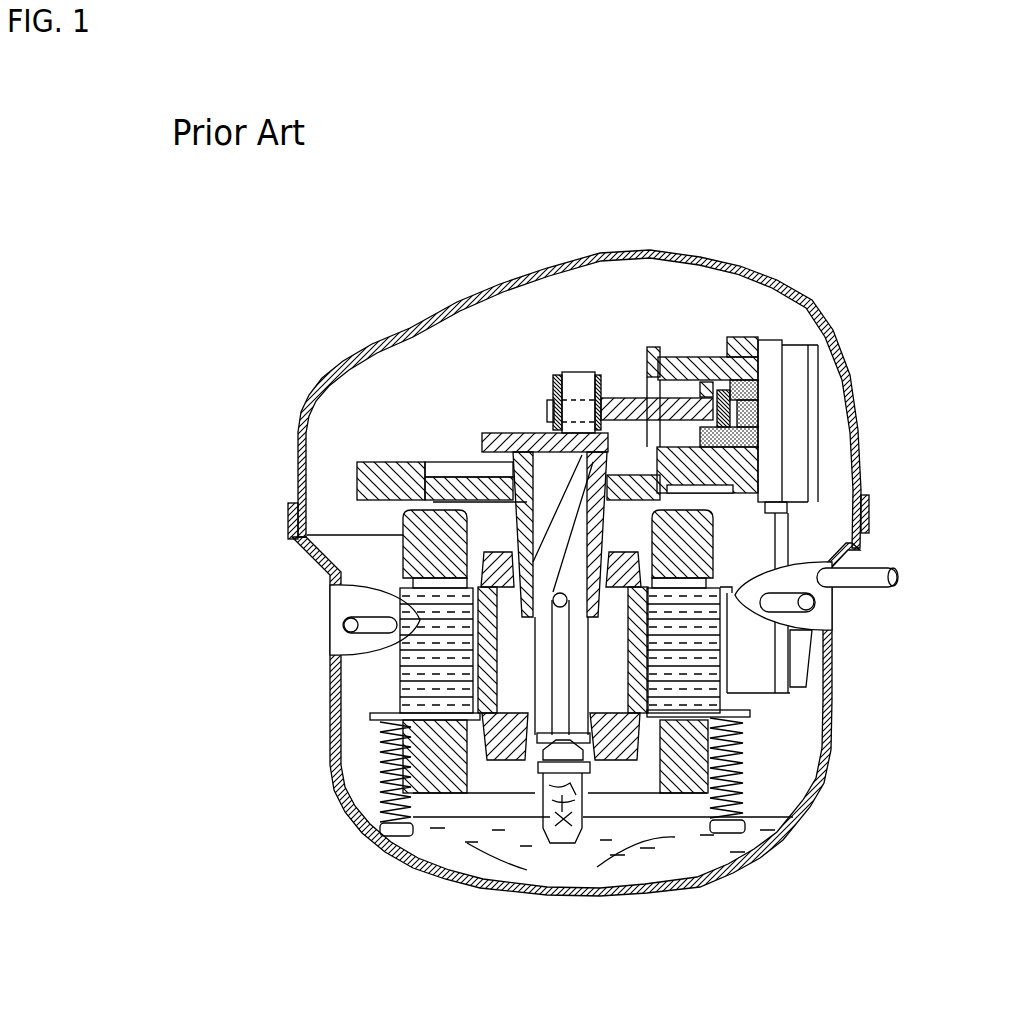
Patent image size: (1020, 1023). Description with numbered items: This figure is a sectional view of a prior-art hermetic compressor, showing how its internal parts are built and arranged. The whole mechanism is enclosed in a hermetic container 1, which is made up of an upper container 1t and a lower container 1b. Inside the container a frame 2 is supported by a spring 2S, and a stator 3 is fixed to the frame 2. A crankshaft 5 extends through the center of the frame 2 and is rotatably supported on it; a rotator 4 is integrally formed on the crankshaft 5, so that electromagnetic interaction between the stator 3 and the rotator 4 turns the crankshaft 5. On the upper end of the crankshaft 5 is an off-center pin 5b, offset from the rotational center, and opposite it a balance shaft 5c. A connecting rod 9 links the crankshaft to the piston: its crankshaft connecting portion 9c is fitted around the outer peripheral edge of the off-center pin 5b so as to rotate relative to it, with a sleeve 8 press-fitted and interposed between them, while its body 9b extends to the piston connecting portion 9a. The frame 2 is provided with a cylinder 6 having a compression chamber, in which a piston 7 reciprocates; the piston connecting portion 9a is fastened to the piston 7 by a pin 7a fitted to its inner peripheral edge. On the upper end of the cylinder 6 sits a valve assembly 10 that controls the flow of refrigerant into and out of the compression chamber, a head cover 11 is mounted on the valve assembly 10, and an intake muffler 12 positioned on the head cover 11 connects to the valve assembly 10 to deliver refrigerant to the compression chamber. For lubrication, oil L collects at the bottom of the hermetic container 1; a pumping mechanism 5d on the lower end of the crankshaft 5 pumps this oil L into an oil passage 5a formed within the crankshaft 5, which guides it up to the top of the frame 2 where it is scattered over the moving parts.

The hermetic container 1 is at (228, 580).
The upper container 1t is at (300, 460).
The lower container 1b is at (328, 653).
The frame 2 is at (393, 462).
The spring 2S is at (385, 805).
The stator 3 is at (400, 695).
The rotator 4 is at (642, 683).
The crankshaft 5 is at (530, 667).
The oil passage 5a is at (535, 740).
The off-center pin 5b is at (590, 373).
The balance shaft 5c is at (497, 433).
The pumping mechanism 5d is at (545, 815).
The cylinder 6 is at (703, 355).
The piston 7 is at (747, 430).
The pin 7a is at (723, 387).
The sleeve 8 is at (559, 373).
The connecting rod 9 is at (631, 382).
The piston connecting portion 9a is at (733, 408).
The body of the connecting rod 9b is at (680, 360).
The crankshaft connecting portion 9c is at (548, 410).
The valve assembly 10 is at (763, 360).
The head cover 11 is at (786, 373).
The intake muffler 12 is at (767, 660).
The oil L is at (623, 847).